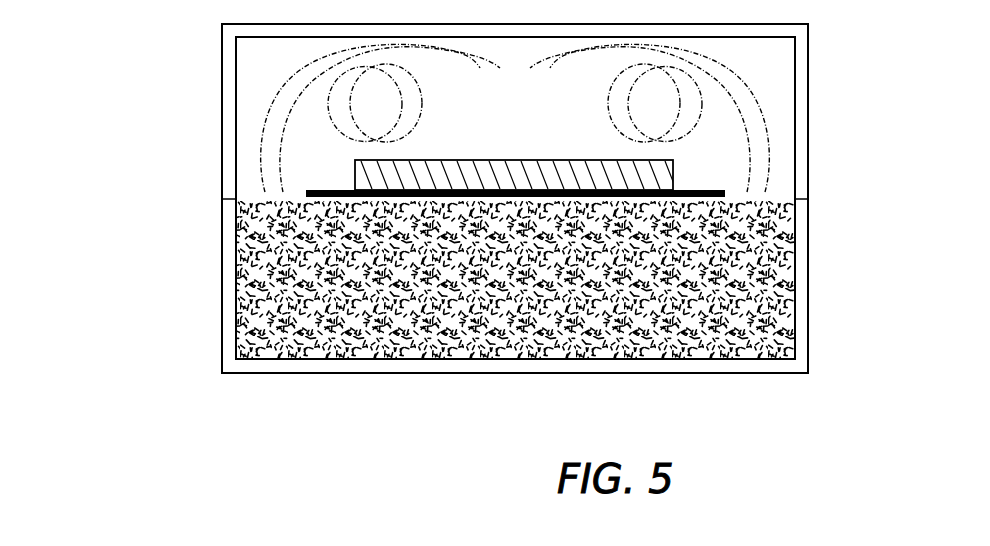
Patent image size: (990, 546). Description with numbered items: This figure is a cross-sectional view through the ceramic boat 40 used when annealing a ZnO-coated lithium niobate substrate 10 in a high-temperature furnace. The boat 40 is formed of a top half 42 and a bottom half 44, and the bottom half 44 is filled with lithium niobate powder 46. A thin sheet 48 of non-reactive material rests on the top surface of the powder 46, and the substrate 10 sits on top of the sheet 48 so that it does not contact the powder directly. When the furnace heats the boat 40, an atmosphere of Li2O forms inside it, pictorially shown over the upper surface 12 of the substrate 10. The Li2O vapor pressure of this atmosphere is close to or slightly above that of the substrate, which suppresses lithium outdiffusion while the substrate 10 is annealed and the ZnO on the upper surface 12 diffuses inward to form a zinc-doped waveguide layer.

The lithium niobate substrate 10 is at (355, 172).
The upper surface 12 is at (647, 158).
The ceramic boat 40 is at (222, 338).
The top half 42 is at (809, 118).
The bottom half 44 is at (809, 280).
The lithium niobate powder 46 is at (740, 336).
The thin sheet 48 is at (697, 190).